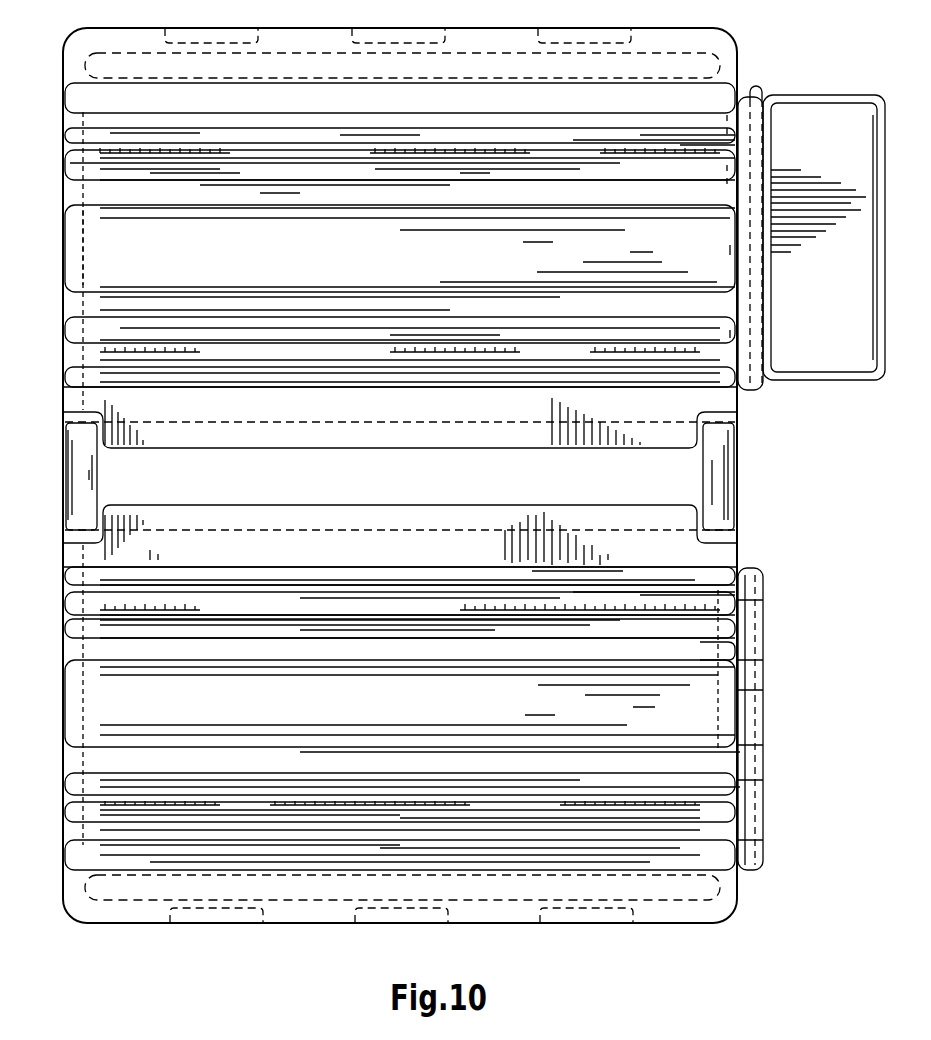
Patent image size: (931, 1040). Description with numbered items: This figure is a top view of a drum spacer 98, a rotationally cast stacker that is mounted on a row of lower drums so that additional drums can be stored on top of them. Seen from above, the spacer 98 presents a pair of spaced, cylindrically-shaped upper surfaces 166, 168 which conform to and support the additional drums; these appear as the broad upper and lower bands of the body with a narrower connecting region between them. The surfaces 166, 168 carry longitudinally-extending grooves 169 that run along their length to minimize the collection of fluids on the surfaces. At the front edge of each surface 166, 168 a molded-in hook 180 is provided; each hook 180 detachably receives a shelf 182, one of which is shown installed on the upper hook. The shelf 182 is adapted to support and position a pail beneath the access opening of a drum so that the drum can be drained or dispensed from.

The drum spacer 98 is at (64, 262).
The cylindrically-shaped upper surface 166 is at (112, 699).
The cylindrically-shaped upper surface 168 is at (107, 243).
The longitudinally-extending grooves 169 is at (701, 787).
The molded-in hook 180 is at (752, 392).
The shelf 182 is at (826, 128).